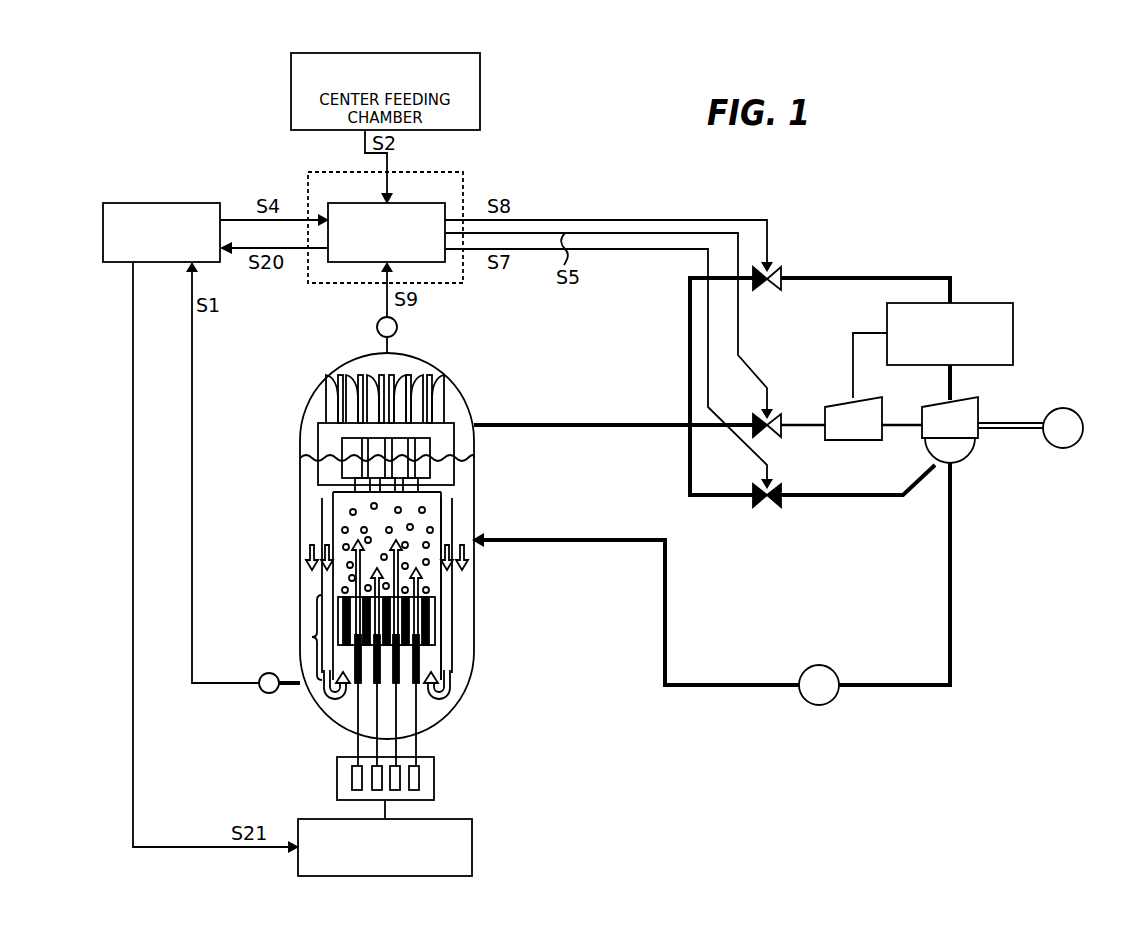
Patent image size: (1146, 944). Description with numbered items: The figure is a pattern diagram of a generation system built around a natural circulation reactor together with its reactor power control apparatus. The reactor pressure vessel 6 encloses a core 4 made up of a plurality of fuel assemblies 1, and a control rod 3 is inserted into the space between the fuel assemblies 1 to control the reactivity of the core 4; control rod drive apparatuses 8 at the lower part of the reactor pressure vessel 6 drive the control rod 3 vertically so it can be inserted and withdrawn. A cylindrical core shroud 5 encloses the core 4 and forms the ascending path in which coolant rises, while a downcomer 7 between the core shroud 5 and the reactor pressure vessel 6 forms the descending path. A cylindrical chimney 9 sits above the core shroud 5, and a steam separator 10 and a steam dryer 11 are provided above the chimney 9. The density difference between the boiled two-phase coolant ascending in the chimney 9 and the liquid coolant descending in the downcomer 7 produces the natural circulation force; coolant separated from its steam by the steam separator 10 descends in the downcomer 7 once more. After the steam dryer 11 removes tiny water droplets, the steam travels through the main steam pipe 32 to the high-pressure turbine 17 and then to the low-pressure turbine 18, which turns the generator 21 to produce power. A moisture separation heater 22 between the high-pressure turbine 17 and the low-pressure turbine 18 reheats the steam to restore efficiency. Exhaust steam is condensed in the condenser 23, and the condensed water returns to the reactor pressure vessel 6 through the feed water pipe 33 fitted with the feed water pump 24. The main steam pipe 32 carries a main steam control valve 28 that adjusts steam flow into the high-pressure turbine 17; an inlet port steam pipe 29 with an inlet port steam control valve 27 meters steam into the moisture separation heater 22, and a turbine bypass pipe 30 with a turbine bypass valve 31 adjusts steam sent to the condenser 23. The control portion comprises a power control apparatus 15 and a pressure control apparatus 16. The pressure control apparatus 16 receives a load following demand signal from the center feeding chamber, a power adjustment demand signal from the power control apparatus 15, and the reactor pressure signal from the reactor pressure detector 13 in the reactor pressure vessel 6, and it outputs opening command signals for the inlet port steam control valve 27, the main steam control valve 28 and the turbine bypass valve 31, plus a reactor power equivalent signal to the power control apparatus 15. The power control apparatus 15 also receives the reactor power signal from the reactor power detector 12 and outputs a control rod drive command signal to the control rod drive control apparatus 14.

The fuel assembly 1 is at (430, 606).
The control rod 3 is at (420, 662).
The core 4 is at (425, 622).
The core shroud 5 is at (312, 637).
The reactor pressure vessel 6 is at (473, 396).
The downcomer 7 is at (463, 578).
The control rod drive apparatus 8 is at (434, 778).
The chimney 9 is at (322, 498).
The steam separator 10 is at (345, 445).
The steam dryer 11 is at (428, 376).
The reactor power detector 12 is at (268, 693).
The reactor pressure detector 13 is at (377, 327).
The control rod drive control apparatus 14 is at (472, 846).
The power control apparatus 15 is at (176, 204).
The pressure control apparatus 16 is at (398, 204).
The high-pressure turbine 17 is at (868, 398).
The low-pressure turbine 18 is at (962, 398).
The generator 21 is at (1083, 428).
The moisture separation heater 22 is at (970, 303).
The condenser 23 is at (968, 462).
The feed water pump 24 is at (819, 705).
The inlet port steam control valve 27 is at (773, 272).
The main steam control valve 28 is at (773, 418).
The inlet port steam pipe 29 is at (875, 278).
The turbine bypass pipe 30 is at (838, 497).
The turbine bypass valve 31 is at (773, 488).
The main steam pipe 32 is at (572, 425).
The feed water pipe 33 is at (708, 687).